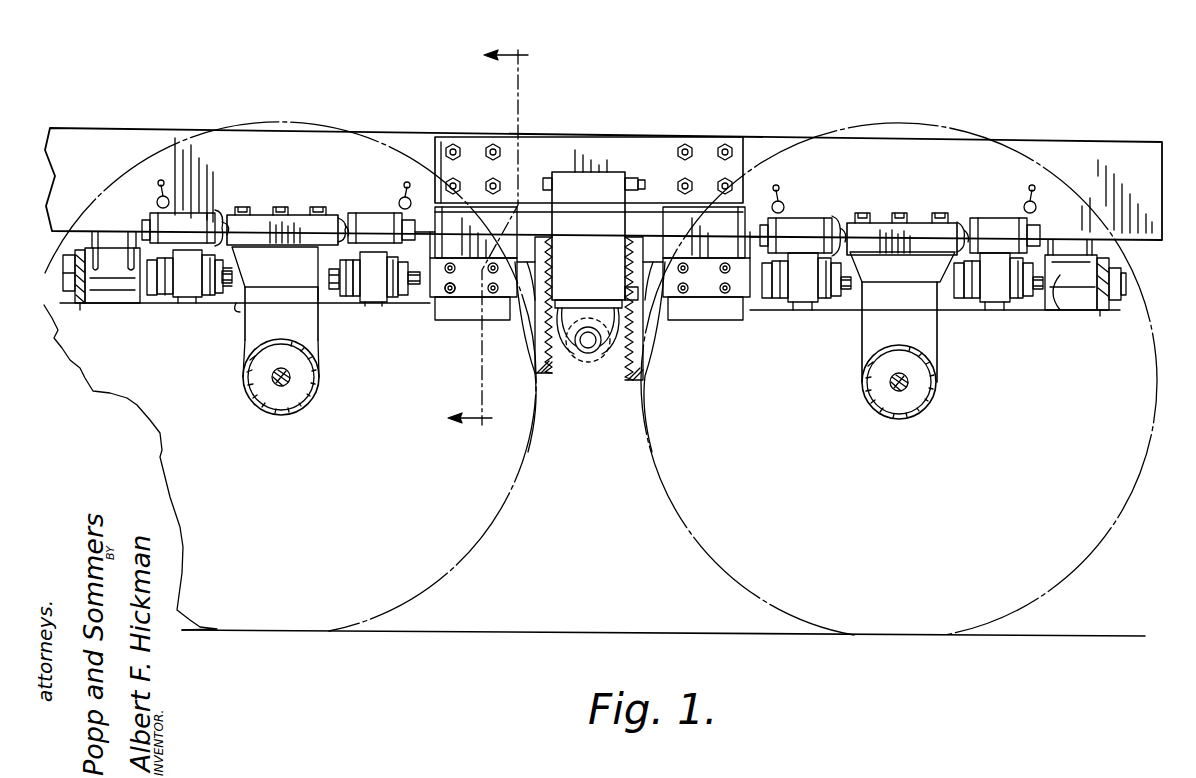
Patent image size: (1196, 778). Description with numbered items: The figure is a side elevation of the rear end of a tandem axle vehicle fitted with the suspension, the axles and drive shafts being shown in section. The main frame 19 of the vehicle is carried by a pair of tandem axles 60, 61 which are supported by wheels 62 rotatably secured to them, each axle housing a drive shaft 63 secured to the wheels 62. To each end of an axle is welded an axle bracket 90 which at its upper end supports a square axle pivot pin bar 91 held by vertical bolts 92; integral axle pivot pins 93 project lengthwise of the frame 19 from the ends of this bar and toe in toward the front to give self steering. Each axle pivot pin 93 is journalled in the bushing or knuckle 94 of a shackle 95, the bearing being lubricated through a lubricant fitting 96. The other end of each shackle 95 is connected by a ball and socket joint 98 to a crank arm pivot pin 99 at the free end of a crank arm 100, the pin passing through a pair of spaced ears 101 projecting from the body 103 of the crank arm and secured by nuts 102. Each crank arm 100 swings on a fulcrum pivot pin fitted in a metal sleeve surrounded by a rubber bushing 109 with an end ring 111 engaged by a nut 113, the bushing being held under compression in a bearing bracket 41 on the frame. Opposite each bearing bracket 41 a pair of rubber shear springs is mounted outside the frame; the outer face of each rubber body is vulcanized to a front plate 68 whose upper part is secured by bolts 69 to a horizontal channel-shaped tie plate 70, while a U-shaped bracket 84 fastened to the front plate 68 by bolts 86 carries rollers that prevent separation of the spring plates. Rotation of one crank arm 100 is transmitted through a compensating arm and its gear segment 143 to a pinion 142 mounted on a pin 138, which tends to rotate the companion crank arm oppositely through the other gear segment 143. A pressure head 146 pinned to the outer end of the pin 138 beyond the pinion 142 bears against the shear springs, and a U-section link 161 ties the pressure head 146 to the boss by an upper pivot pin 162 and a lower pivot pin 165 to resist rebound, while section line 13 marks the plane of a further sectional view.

The section line 13- 13 is at (503, 238).
The main frame 19 is at (1122, 138).
The bearing bracket 41 is at (114, 304).
The front tandem axle 60 is at (289, 415).
The rear tandem axle 61 is at (936, 392).
The wheels 62 is at (456, 568).
The drive shafts 63 is at (282, 386).
The front plate 68 is at (480, 230).
The bolts 69 is at (490, 180).
The tie plate 70 is at (528, 152).
The U-shaped bracket 84 is at (468, 254).
The bolts 86 is at (452, 296).
The axle bracket 90 is at (306, 328).
The axle pivot pin bar 91 is at (288, 214).
The vertical bolts 92 is at (243, 206).
The axle pivot pins 93 is at (222, 212).
The bushing or knuckle 94 is at (180, 212).
The shackle 95 is at (590, 276).
The lubricant fitting 96 is at (160, 194).
The ball and socket joint 98 is at (192, 298).
The crank arm pivot pin 99 is at (236, 278).
The crank arm 100 is at (240, 307).
The ears 101 is at (162, 300).
The nuts 102 is at (236, 266).
The body of crank arm 103 is at (322, 300).
The rubber bushing 109 is at (93, 305).
The end ring 111 is at (81, 305).
The nut 113 is at (76, 303).
The pin 138 is at (590, 352).
The pinion 142 is at (575, 356).
The gear segments 143 is at (622, 252).
The pressure head 146 is at (588, 316).
The link 161 is at (614, 200).
The pivot pin 162 is at (643, 180).
The pivot pin 165 is at (650, 318).